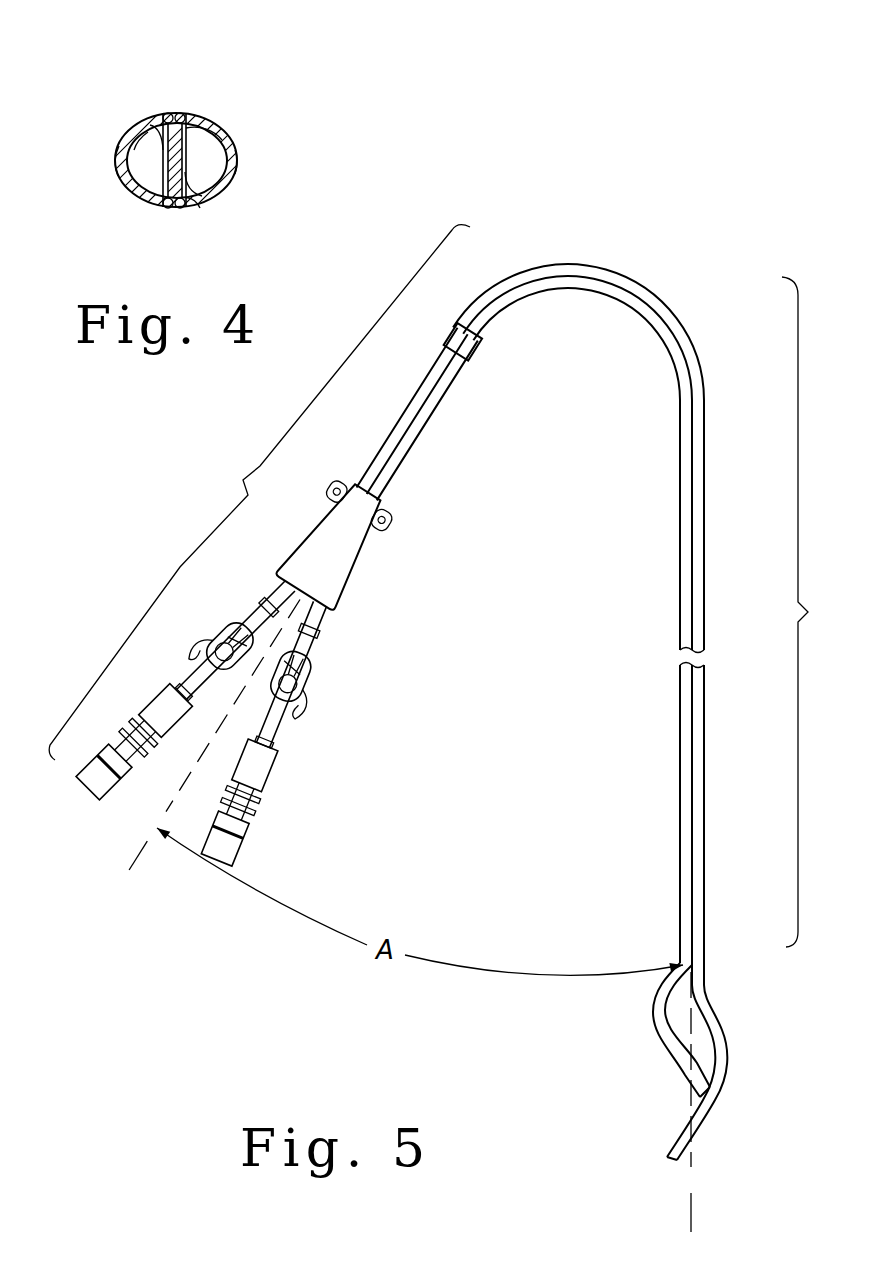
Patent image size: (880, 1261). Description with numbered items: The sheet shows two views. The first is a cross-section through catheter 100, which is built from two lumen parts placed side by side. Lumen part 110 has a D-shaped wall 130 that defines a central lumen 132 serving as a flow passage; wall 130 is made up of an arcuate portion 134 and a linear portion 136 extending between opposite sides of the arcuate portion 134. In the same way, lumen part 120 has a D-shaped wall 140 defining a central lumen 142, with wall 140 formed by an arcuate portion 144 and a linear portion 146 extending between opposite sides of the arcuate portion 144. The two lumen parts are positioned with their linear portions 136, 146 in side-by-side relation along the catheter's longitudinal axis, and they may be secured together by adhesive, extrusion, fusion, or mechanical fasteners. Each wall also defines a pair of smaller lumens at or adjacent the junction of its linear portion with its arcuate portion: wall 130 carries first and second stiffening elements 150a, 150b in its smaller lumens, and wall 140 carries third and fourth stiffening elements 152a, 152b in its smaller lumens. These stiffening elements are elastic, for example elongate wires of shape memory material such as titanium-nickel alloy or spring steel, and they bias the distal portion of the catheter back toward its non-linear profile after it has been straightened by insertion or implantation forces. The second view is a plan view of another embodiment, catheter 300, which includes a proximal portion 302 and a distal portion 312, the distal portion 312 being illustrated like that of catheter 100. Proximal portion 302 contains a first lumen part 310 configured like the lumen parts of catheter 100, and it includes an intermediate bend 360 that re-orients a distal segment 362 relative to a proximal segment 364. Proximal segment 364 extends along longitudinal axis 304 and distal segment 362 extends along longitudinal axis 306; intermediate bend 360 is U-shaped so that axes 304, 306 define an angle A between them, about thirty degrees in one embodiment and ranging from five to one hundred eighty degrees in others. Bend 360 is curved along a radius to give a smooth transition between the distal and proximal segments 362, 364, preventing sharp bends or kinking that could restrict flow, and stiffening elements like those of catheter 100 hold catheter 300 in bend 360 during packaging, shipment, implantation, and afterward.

In FIG. 4, the catheter 100 is at (110, 77).
In FIG. 4, the lumen part 110 is at (108, 163).
In FIG. 4, the lumen part 120 is at (243, 150).
In FIG. 4, the D-shaped wall 130 is at (147, 200).
In FIG. 4, the central lumen 132 is at (140, 143).
In FIG. 4, the arcuate portion 134 is at (117, 146).
In FIG. 4, the linear portion 136 is at (152, 125).
In FIG. 4, the D-shaped wall 140 is at (238, 165).
In FIG. 4, the central lumen 142 is at (200, 208).
In FIG. 4, the arcuate portion 144 is at (218, 133).
In FIG. 4, the linear portion 146 is at (197, 190).
In FIG. 4, the first stiffening element 150a is at (170, 114).
In FIG. 4, the second stiffening element 150b is at (163, 210).
In FIG. 4, the third stiffening element 152a is at (181, 113).
In FIG. 4, the fourth stiffening element 152b is at (182, 211).
In FIG. 5, the catheter 300 is at (654, 197).
In FIG. 5, the proximal portion 302 is at (397, 408).
In FIG. 5, the longitudinal axis 304 is at (140, 850).
In FIG. 5, the longitudinal axis 306 is at (691, 1200).
In FIG. 5, the first lumen part 310 is at (707, 707).
In FIG. 5, the distal portion 312 is at (675, 566).
In FIG. 5, the intermediate bend 360 is at (646, 289).
In FIG. 5, the distal segment 362 is at (819, 612).
In FIG. 5, the proximal segment 364 is at (259, 492).